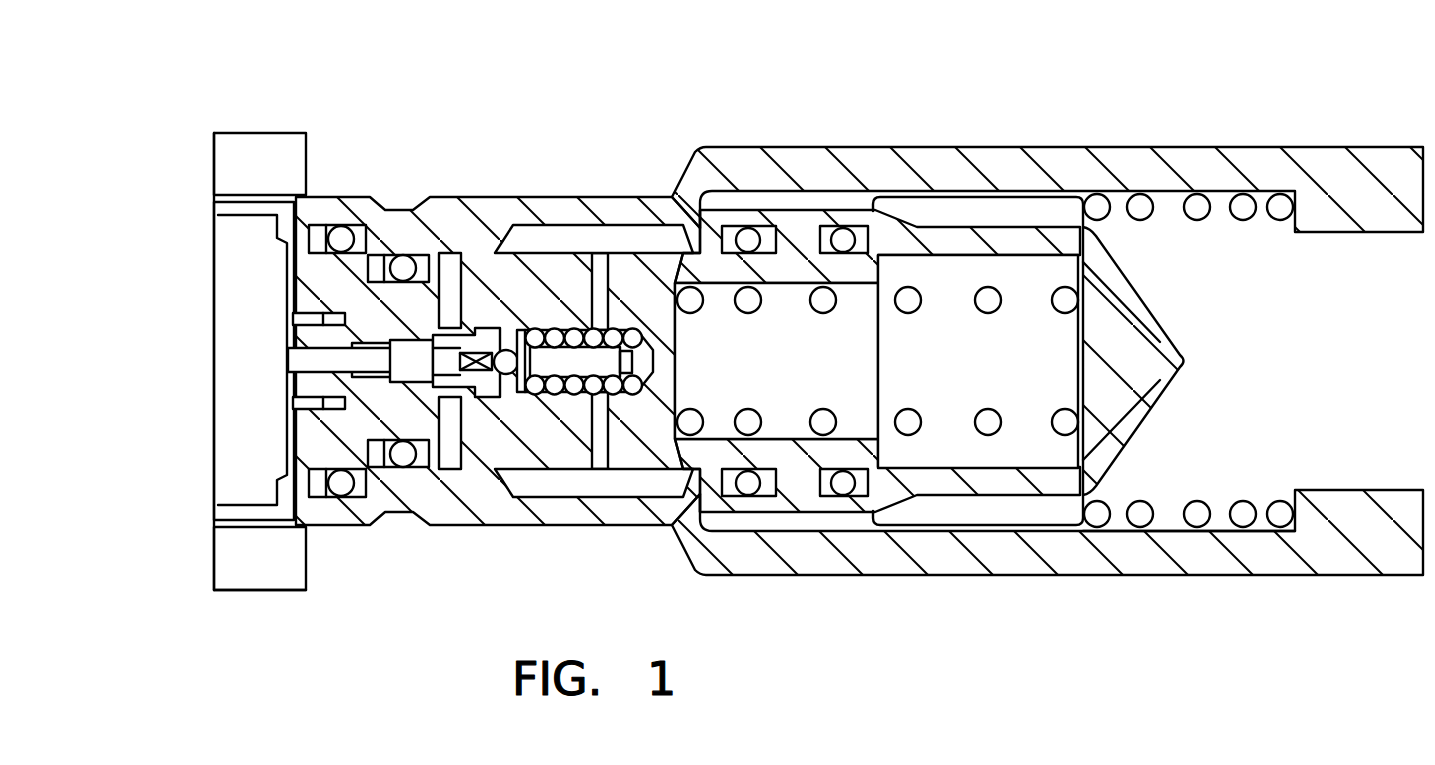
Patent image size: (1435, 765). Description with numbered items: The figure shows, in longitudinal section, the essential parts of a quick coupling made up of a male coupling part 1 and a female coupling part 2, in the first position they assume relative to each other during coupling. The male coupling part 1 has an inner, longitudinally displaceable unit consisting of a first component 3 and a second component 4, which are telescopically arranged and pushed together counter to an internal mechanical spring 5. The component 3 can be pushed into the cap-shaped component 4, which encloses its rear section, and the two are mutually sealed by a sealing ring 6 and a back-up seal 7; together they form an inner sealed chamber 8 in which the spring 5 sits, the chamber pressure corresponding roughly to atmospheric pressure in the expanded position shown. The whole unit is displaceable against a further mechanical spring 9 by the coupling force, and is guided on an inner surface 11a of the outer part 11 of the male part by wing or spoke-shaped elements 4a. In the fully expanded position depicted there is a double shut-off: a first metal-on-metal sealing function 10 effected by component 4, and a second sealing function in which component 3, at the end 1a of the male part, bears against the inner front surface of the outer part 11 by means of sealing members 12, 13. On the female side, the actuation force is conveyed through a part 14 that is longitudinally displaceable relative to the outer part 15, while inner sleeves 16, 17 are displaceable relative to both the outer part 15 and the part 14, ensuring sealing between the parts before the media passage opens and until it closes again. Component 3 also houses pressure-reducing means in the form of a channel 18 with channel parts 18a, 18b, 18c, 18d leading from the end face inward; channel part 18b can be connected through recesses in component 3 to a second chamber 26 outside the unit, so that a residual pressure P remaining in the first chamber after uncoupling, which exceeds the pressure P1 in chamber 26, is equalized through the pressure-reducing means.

The male coupling part 1 is at (1058, 124).
The end of the male part 1a is at (224, 601).
The female coupling part 2 is at (204, 126).
The first component 3 is at (490, 472).
The second component 4 is at (952, 238).
The wing or spoke-shaped elements 4a is at (913, 520).
The mechanical spring 5 is at (690, 293).
The sealing member 6 is at (752, 238).
The sealing member 7 is at (845, 236).
The inner sealed chamber 8 is at (770, 327).
The mechanical spring 9 is at (1195, 205).
The first shut-off or sealing function 10 is at (690, 527).
The outer part of the male part 11 is at (758, 563).
The inner surface of outer part 11a is at (1190, 533).
The sealing member 12 is at (342, 226).
The sealing member 13 is at (407, 262).
The part in the female part 14 is at (258, 285).
The outer part of the female part 15 is at (293, 157).
The inner sleeve 16 is at (268, 508).
The inner sleeve 17 is at (232, 222).
The channel 18 is at (298, 360).
The channel part 18a is at (330, 403).
The channel part 18b is at (448, 387).
The channel part 18c is at (577, 330).
The channel part 18d is at (597, 333).
The second chamber 26 is at (512, 242).
The pressure P is at (755, 517).
The pressure P1 is at (603, 484).